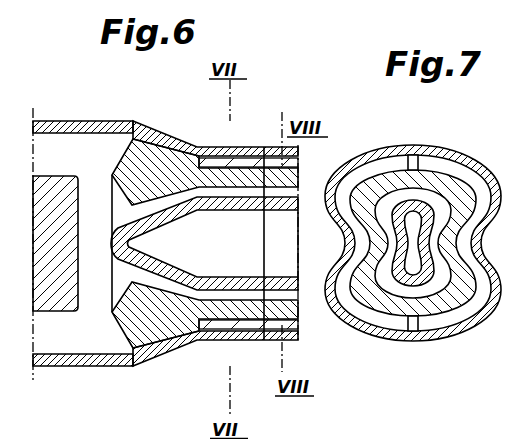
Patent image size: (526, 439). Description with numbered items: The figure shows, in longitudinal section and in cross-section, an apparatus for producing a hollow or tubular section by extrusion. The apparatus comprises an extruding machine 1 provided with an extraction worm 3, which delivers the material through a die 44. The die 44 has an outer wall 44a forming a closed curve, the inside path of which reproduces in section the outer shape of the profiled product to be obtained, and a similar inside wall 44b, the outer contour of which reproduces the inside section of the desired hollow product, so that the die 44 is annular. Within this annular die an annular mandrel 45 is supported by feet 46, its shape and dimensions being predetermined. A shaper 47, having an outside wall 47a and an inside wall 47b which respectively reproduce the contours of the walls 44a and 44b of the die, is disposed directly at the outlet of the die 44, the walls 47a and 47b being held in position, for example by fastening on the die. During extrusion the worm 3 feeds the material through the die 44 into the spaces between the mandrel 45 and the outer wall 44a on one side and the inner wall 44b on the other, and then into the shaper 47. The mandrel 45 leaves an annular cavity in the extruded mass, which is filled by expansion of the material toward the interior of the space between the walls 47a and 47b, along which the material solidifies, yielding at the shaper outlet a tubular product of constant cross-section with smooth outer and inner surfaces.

In FIG. 6, the extruding machine 1 is at (81, 118).
In FIG. 6, the extraction worm 3 is at (58, 302).
In FIG. 6, the die 44 is at (217, 147).
In FIG. 6, the outer wall 44a is at (233, 147).
In FIG. 7, the outer wall 44a is at (436, 152).
In FIG. 6, the inside wall 44b is at (222, 207).
In FIG. 7, the inside wall 44b is at (422, 282).
In FIG. 6, the mandrel 45 is at (218, 317).
In FIG. 7, the mandrel 45 is at (455, 217).
In FIG. 6, the feet 46 is at (150, 143).
In FIG. 7, the feet 46 is at (414, 325).
In FIG. 6, the shaper 47 is at (264, 350).
In FIG. 6, the outside wall 47a is at (298, 344).
In FIG. 6, the inside wall 47b is at (282, 208).